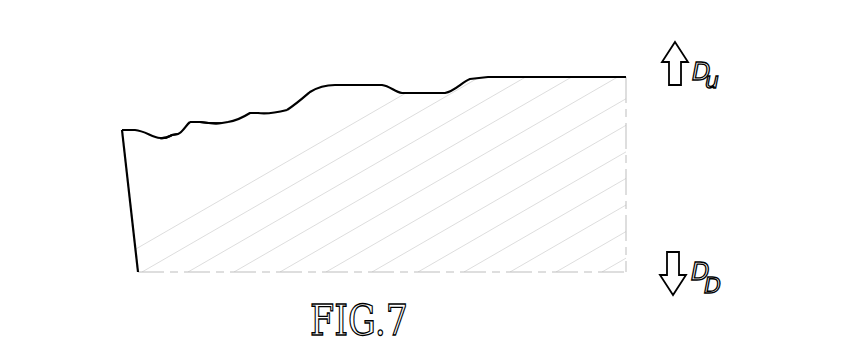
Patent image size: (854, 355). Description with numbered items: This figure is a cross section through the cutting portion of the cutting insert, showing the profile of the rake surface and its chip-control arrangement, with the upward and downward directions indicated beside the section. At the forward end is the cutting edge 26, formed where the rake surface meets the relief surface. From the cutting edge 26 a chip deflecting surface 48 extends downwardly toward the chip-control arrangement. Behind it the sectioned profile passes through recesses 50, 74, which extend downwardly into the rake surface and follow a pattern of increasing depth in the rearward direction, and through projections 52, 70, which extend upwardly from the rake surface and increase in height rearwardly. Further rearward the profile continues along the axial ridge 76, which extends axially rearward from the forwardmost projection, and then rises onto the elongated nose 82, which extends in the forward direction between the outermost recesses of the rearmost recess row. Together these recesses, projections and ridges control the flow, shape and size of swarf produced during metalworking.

The cutting edge 26 is at (122, 130).
The chip deflecting surface 48 is at (135, 128).
The recess 50 is at (170, 136).
The recess 74 is at (162, 86).
The projection 52 is at (200, 122).
The second chip breaker surface 70 is at (232, 79).
The axial ridge 76 is at (226, 122).
The elongated nose 82 is at (308, 92).